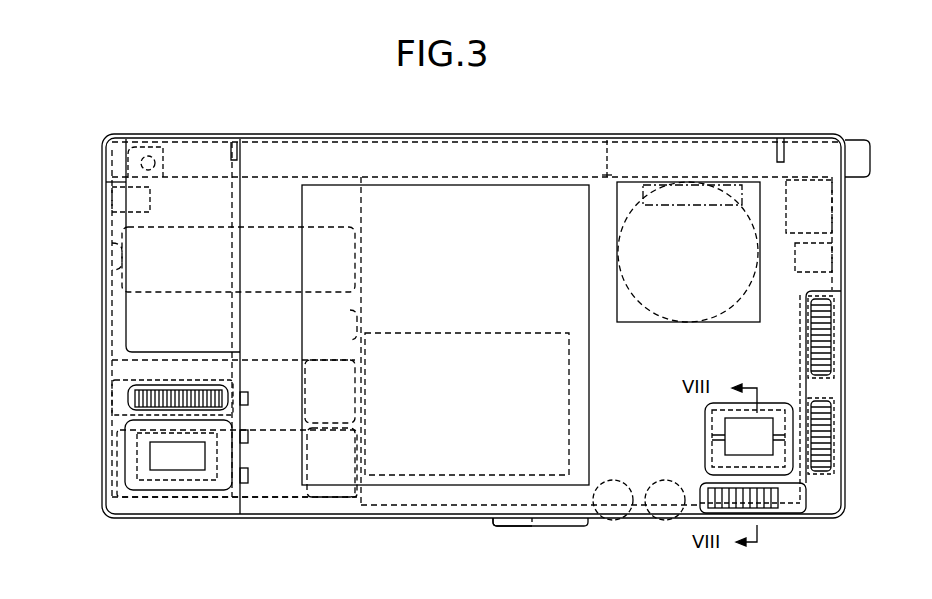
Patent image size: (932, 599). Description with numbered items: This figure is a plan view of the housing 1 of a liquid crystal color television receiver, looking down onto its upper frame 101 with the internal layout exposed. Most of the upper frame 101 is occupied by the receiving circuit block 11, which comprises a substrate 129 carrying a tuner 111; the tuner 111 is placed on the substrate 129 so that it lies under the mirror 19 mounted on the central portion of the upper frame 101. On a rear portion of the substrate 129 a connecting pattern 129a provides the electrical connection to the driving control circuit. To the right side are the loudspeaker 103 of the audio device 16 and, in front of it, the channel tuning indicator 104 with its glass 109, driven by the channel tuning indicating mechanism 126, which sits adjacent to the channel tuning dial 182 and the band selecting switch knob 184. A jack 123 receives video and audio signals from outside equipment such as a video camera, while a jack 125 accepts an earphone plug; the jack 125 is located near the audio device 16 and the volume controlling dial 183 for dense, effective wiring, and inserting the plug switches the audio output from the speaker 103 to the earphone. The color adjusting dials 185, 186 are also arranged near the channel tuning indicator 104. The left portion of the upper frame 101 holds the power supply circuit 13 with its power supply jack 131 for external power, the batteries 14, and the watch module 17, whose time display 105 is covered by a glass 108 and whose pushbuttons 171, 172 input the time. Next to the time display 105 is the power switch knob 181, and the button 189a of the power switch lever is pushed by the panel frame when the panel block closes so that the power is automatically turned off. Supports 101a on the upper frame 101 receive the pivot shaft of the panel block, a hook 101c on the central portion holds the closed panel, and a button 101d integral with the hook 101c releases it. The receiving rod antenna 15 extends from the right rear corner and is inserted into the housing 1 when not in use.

The housing 1 is at (504, 132).
The receiving circuit block 11 is at (455, 510).
The power supply circuit 13 is at (124, 160).
The batteries 14 is at (124, 239).
The receiving rod antenna 15 is at (865, 157).
The audio device 16 is at (717, 195).
The watch module 17 is at (153, 479).
The mirror 19 is at (323, 478).
The upper frame 101 is at (297, 152).
The support 101a is at (234, 142).
The hook 101c is at (543, 522).
The button 101d is at (512, 524).
The loudspeaker 103 is at (635, 323).
The channel tuning indicator 104 is at (712, 427).
The time display 105 is at (155, 457).
The glass 108 is at (183, 471).
The glass 109 is at (720, 445).
The tuner 111 is at (399, 476).
The jack 123 is at (828, 207).
The jack 125 is at (830, 257).
The channel tuning indicating mechanism 126 is at (767, 432).
The substrate 129 is at (607, 140).
The connecting pattern 129a is at (645, 195).
The power supply jack 131 is at (114, 200).
The pushbutton 171 is at (249, 475).
The pushbutton 172 is at (249, 437).
The power switch knob 181 is at (137, 397).
The channel tuning dial 182 is at (830, 428).
The volume controlling dial 183 is at (830, 325).
The band selecting switch knob 184 is at (767, 511).
The color adjusting dial 185 is at (665, 521).
The color adjusting dial 186 is at (613, 521).
The button 189a is at (249, 398).